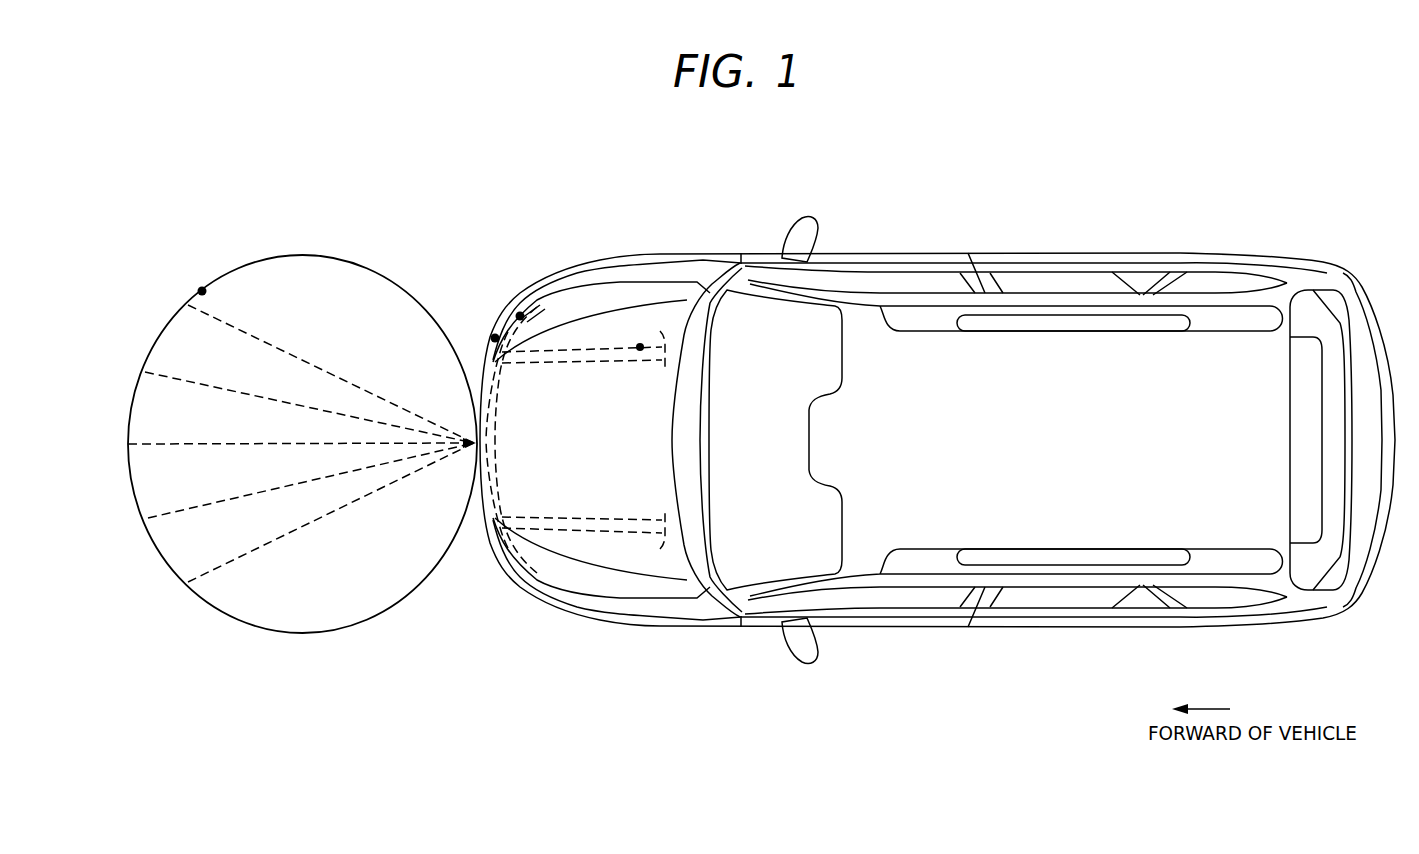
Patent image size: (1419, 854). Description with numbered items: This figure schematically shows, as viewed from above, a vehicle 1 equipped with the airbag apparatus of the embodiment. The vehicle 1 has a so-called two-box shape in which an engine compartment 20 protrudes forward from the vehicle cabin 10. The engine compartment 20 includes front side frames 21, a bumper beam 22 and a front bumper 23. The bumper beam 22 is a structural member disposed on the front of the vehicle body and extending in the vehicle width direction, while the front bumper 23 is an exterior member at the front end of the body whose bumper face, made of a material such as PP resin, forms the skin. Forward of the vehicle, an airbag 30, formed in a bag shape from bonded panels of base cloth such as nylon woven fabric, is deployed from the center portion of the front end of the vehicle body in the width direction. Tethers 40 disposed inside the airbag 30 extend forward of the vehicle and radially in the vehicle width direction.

The vehicle 1 is at (927, 391).
The vehicle cabin 10 is at (1044, 242).
The engine compartment 20 is at (615, 245).
The front side frames 21 is at (640, 347).
The bumper beam 22 is at (520, 316).
The front bumper 23 is at (495, 338).
The airbag 30 is at (202, 291).
The tethers 40 is at (292, 343).